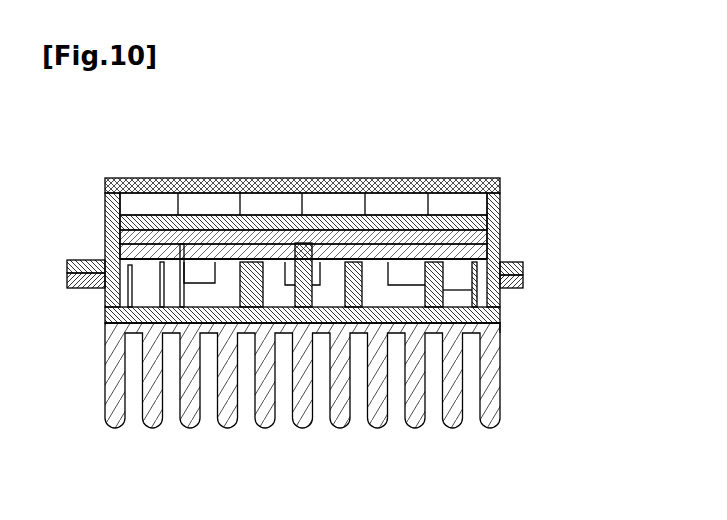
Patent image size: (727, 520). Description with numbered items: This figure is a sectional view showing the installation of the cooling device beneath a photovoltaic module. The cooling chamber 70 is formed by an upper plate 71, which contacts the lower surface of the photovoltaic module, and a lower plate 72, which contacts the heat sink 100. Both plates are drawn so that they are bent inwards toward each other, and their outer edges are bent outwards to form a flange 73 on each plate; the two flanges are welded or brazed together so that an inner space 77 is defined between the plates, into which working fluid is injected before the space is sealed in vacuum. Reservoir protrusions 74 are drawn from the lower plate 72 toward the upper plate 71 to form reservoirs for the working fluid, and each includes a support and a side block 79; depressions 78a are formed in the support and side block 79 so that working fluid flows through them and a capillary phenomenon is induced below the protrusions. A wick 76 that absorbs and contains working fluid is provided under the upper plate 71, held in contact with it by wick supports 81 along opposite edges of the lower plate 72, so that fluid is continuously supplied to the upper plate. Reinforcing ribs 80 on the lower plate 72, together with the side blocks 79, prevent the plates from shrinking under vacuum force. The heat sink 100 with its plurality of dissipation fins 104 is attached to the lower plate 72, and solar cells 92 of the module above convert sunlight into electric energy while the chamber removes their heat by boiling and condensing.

The cooling chamber 70 is at (581, 179).
The upper plate 71 is at (138, 243).
The lower plate 72 is at (107, 313).
The flange 73 is at (525, 268).
The reservoir protrusion 74 is at (381, 265).
The wick 76 is at (308, 264).
The inner space 77 is at (148, 272).
The depression 78a is at (182, 265).
The side block 79 is at (133, 333).
The reinforcing rib 80 is at (500, 178).
The wick support 81 is at (122, 265).
The solar cell 92 is at (195, 202).
The heat sink 100 is at (145, 298).
The dissipation fin 104 is at (228, 418).